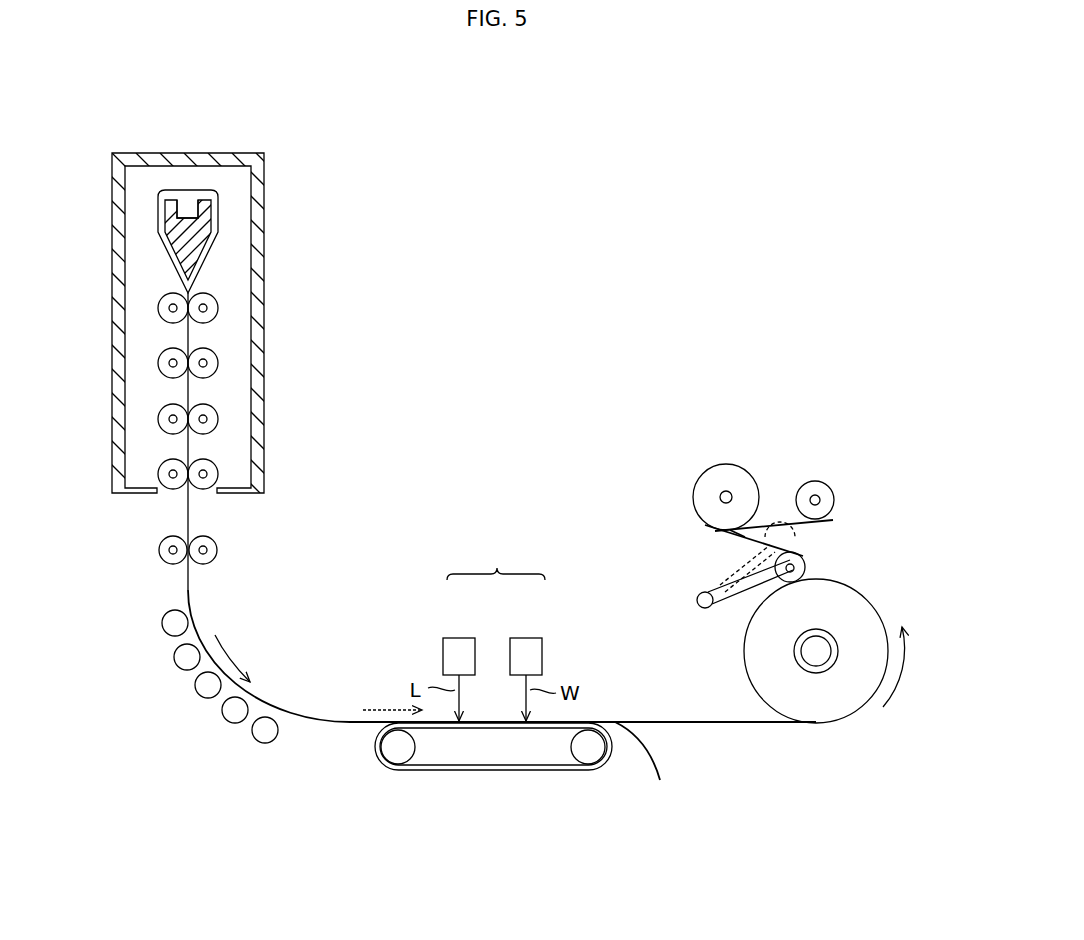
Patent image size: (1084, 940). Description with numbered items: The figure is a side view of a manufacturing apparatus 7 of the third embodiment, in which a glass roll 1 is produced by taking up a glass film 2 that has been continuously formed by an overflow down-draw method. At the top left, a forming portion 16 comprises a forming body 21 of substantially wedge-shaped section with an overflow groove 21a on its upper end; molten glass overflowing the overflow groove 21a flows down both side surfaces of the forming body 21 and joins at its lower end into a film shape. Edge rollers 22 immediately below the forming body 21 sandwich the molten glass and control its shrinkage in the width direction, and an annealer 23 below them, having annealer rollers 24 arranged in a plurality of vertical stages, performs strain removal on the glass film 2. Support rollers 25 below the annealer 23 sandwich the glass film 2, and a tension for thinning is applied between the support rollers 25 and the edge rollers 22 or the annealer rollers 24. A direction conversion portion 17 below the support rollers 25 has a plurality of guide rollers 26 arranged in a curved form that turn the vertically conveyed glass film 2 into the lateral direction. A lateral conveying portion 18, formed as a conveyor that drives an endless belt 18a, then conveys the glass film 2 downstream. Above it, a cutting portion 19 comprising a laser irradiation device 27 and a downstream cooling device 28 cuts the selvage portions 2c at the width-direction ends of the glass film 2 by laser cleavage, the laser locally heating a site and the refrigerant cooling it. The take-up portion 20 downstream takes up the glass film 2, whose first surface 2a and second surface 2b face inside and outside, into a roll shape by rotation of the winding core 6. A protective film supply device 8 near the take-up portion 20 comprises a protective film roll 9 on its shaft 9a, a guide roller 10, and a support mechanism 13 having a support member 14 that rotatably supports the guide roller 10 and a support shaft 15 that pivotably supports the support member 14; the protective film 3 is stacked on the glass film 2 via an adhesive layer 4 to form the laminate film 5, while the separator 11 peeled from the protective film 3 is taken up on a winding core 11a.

The glass roll 1 is at (898, 602).
The glass film 2 is at (668, 720).
The first surface 2a is at (727, 720).
The second surface 2b is at (745, 726).
The selvage portions 2c is at (660, 760).
The protective film 3 is at (745, 544).
The adhesive layer 4 is at (725, 528).
The laminate film 5 is at (863, 591).
The winding core 6 is at (834, 672).
The manufacturing apparatus 7 is at (594, 216).
The protective film supply device 8 is at (769, 464).
The protective film roll 9 is at (714, 465).
The tape roll shaft 9a is at (728, 492).
The guide roller 10 is at (797, 558).
The separator 11 is at (777, 522).
The winding core 11a is at (817, 499).
The support mechanism 13 is at (703, 587).
The support member 14 is at (748, 576).
The support shaft 15 is at (697, 603).
The forming portion 16 is at (292, 167).
The direction conversion portion 17 is at (140, 612).
The lateral conveying portion 18 is at (493, 795).
The belt 18a is at (512, 772).
The cutting portion 19 is at (494, 632).
The take-up portion 20 is at (895, 720).
The forming body 21 is at (212, 232).
The overflow groove 21a is at (187, 215).
The edge rollers 22 is at (158, 308).
The annealer 23 is at (234, 411).
The annealer rollers 24 is at (158, 363).
The support rollers 25 is at (218, 551).
The guide rollers 26 is at (263, 729).
The laser irradiation device 27 is at (458, 645).
The cooling device 28 is at (522, 645).